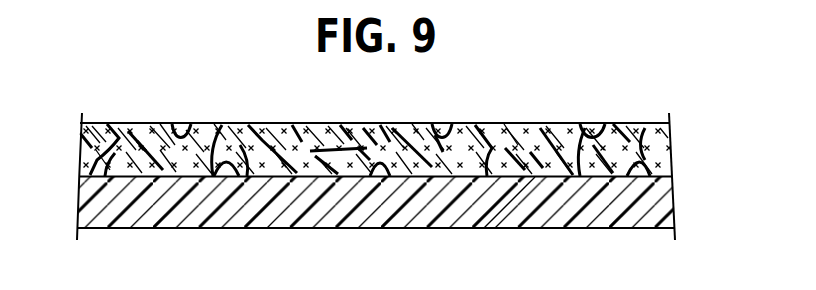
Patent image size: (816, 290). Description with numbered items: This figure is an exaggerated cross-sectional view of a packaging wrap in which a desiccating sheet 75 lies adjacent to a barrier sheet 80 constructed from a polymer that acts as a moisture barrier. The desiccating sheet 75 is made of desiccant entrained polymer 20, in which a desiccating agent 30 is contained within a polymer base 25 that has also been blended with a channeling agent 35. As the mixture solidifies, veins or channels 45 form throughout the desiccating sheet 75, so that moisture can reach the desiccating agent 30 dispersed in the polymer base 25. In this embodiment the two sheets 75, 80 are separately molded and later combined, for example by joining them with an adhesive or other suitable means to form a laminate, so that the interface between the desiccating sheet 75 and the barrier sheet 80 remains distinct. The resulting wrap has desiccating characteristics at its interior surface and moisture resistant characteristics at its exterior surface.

The desiccant entrained polymer 20 is at (663, 110).
The desiccating sheet 75 is at (696, 143).
The barrier sheet 80 is at (698, 213).
The polymer base 25 is at (103, 128).
The desiccating agent 30 is at (218, 122).
The channeling agent 35 is at (332, 124).
The veins or channels 45 is at (163, 122).